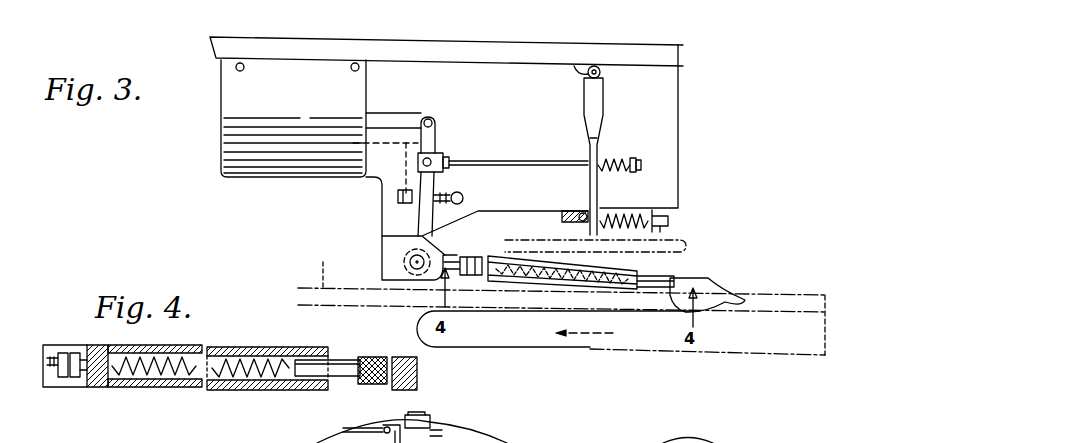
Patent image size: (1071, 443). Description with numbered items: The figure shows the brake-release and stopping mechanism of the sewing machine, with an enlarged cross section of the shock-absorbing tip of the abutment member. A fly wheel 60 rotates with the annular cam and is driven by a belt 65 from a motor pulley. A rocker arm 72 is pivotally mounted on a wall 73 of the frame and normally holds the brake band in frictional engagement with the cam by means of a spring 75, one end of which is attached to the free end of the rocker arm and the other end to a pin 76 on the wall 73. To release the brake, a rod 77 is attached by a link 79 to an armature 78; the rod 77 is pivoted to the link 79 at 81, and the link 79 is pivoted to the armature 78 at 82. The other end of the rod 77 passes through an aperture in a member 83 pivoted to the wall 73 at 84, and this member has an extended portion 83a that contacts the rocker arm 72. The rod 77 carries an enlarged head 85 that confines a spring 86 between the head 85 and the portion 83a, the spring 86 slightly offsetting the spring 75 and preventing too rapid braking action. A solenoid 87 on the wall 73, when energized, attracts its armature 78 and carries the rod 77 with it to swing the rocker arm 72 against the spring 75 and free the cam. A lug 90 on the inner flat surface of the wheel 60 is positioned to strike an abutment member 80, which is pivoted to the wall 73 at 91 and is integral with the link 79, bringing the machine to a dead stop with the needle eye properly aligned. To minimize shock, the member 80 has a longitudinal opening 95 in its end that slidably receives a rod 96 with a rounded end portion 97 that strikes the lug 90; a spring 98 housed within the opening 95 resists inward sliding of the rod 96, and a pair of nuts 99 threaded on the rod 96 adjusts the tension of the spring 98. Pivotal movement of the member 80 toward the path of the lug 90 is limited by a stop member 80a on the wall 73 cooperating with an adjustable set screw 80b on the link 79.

In FIG. 3, the fly wheel 60 is at (726, 346).
In FIG. 3, the belt 65 is at (323, 268).
In FIG. 3, the rocker arm 72 is at (572, 211).
In FIG. 3, the wall 73 is at (678, 98).
In FIG. 3, the spring 75 is at (650, 210).
In FIG. 3, the pin 76 is at (670, 222).
In FIG. 3, the rod 77 is at (515, 160).
In FIG. 3, the armature 78 is at (389, 118).
In FIG. 3, the link 79 is at (461, 131).
In FIG. 3, the abutment member 80 is at (488, 286).
In FIG. 3, the stop member 80a is at (463, 198).
In FIG. 3, the adjustable set screw 80b is at (450, 186).
In FIG. 3, the pivot 81 is at (423, 163).
In FIG. 3, the pivot 82 is at (436, 119).
In FIG. 3, the member 83 is at (598, 101).
In FIG. 3, the extended portion 83a is at (598, 143).
In FIG. 3, the pivot 84 is at (600, 70).
In FIG. 3, the enlarged head 85 is at (641, 161).
In FIG. 3, the spring 86 is at (612, 172).
In FIG. 3, the solenoid 87 is at (236, 153).
In FIG. 3, the lug 90 is at (708, 284).
In FIG. 4, the lug 90 is at (417, 372).
In FIG. 3, the pivot 91 is at (413, 268).
In FIG. 4, the longitudinal opening 95 is at (122, 388).
In FIG. 3, the rod 96 is at (660, 280).
In FIG. 4, the rod 96 is at (340, 378).
In FIG. 4, the rounded end portion 97 is at (383, 386).
In FIG. 4, the spring 98 is at (185, 378).
In FIG. 3, the nuts 99 is at (480, 258).
In FIG. 4, the nuts 99 is at (75, 378).